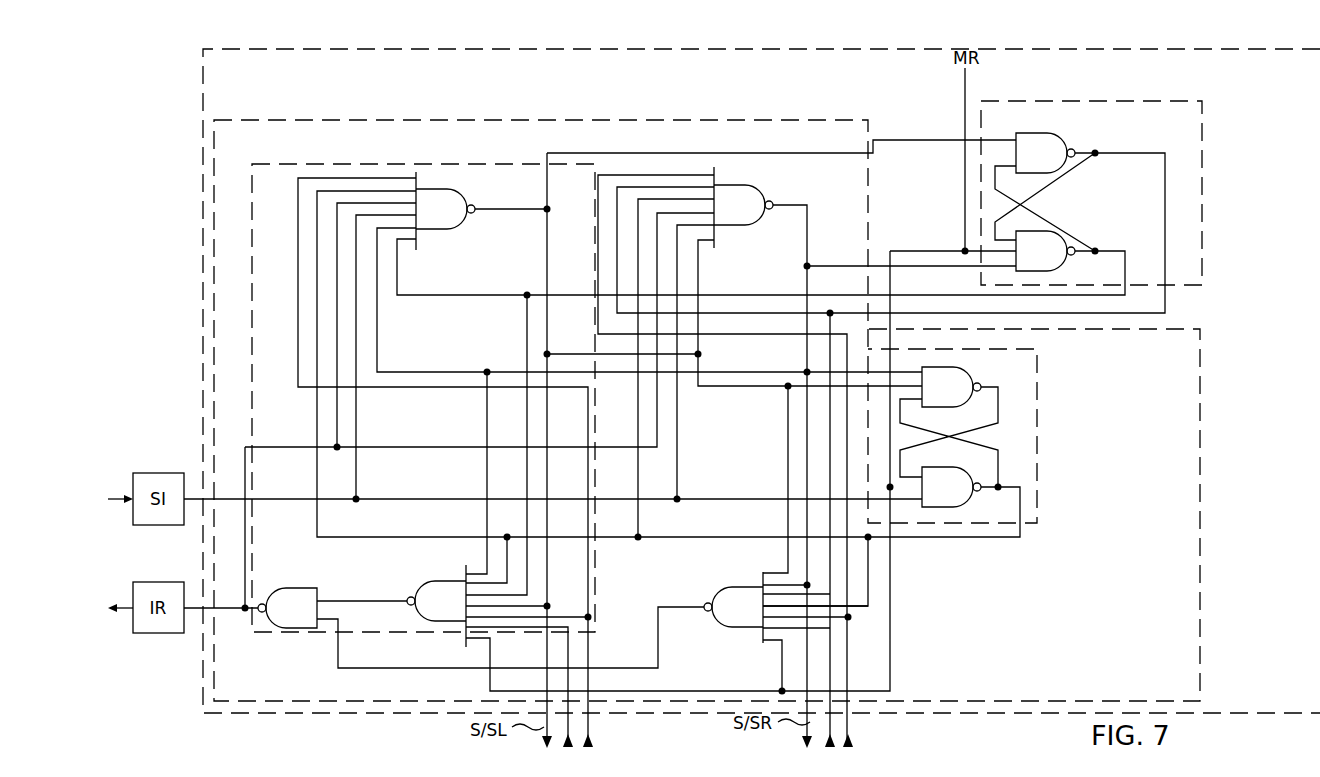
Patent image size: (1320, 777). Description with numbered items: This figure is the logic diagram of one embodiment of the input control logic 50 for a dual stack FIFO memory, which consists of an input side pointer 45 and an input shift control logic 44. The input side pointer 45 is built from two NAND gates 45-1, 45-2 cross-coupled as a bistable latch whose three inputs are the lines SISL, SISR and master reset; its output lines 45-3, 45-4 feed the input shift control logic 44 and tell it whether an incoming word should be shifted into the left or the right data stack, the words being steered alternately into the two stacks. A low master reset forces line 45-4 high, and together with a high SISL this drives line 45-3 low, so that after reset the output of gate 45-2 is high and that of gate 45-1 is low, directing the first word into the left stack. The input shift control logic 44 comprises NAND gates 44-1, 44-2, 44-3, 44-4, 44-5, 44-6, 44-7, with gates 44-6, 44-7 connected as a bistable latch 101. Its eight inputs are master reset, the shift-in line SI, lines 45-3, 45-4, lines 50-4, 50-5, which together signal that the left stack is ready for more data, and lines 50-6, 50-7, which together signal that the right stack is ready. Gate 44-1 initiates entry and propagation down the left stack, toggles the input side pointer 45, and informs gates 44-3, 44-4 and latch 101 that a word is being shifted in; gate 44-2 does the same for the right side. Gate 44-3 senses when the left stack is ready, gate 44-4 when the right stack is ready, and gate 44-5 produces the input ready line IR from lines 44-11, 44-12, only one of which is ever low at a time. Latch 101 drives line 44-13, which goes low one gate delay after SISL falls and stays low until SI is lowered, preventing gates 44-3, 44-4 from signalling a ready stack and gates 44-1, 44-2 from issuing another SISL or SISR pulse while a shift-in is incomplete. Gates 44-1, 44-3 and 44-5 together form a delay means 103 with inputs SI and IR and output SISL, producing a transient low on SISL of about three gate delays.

The input control logic 50 is at (761, 381).
The input shift control logic 44 is at (1190, 523).
The delay means 103 is at (272, 176).
The input side pointer 45 is at (1134, 102).
The bistable latch 101 is at (1030, 410).
The NAND gate 44-1 is at (445, 211).
The NAND gate 44-2 is at (743, 207).
The NAND gate 44-3 is at (436, 606).
The NAND gate 44-4 is at (733, 607).
The NAND gate 44-5 is at (287, 608).
The NAND gate 44-6 is at (951, 387).
The NAND gate 44-7 is at (951, 487).
The signal line 44-11 is at (346, 597).
The signal line 44-12 is at (436, 676).
The signal line 44-13 is at (996, 545).
The NAND gate 45-1 is at (1045, 153).
The NAND gate 45-2 is at (1045, 251).
The output line 45-3 is at (1174, 162).
The output line 45-4 is at (1130, 276).
The input line 50-4 is at (572, 749).
The input line 50-5 is at (596, 728).
The input line 50-6 is at (833, 749).
The input line 50-7 is at (851, 729).